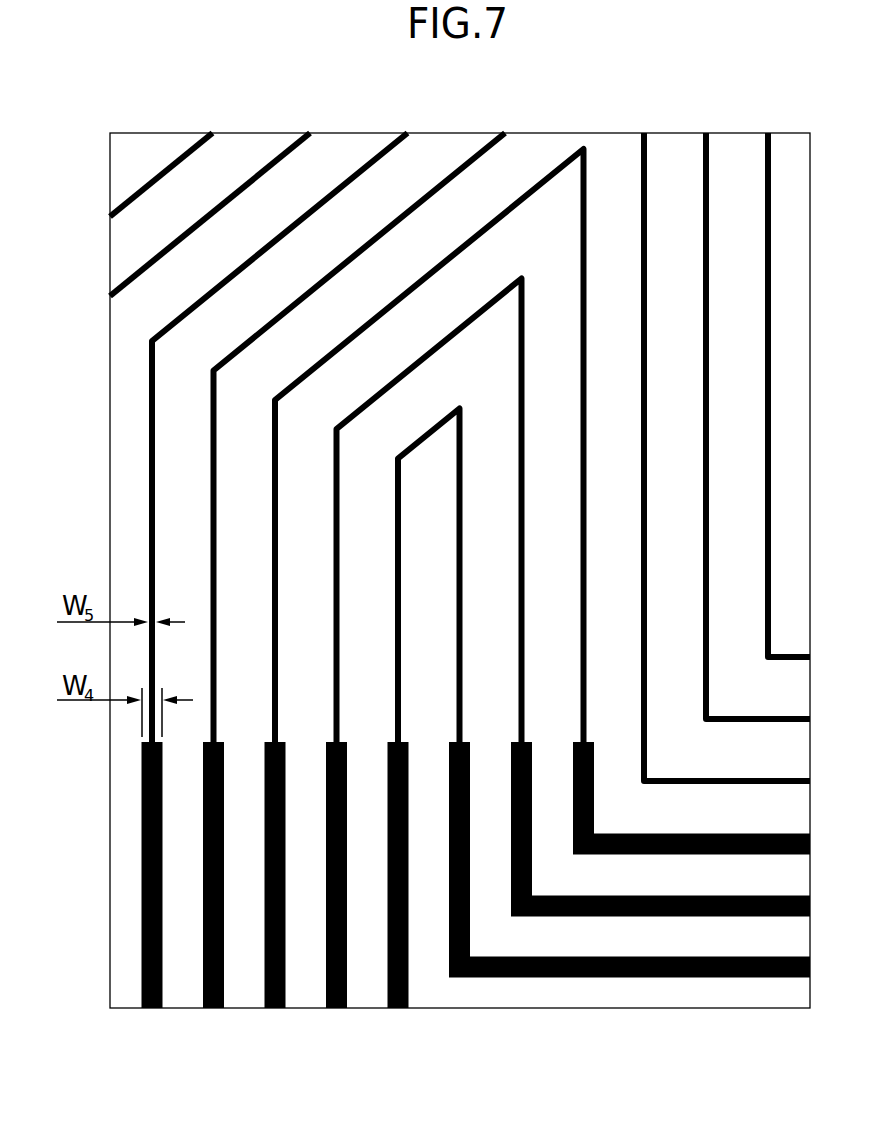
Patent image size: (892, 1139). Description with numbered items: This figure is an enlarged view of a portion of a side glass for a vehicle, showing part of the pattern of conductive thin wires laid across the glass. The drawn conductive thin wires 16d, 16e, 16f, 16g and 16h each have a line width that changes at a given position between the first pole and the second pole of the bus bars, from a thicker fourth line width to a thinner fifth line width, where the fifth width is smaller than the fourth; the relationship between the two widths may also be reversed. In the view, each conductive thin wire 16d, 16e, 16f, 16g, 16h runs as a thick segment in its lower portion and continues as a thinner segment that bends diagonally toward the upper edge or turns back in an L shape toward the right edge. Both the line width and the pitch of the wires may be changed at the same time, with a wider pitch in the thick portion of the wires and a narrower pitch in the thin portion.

The conductive thin wire 16d is at (163, 968).
The conductive thin wire 16e is at (224, 968).
The conductive thin wire 16f is at (286, 968).
The conductive thin wire 16g is at (348, 968).
The conductive thin wire 16h is at (409, 968).